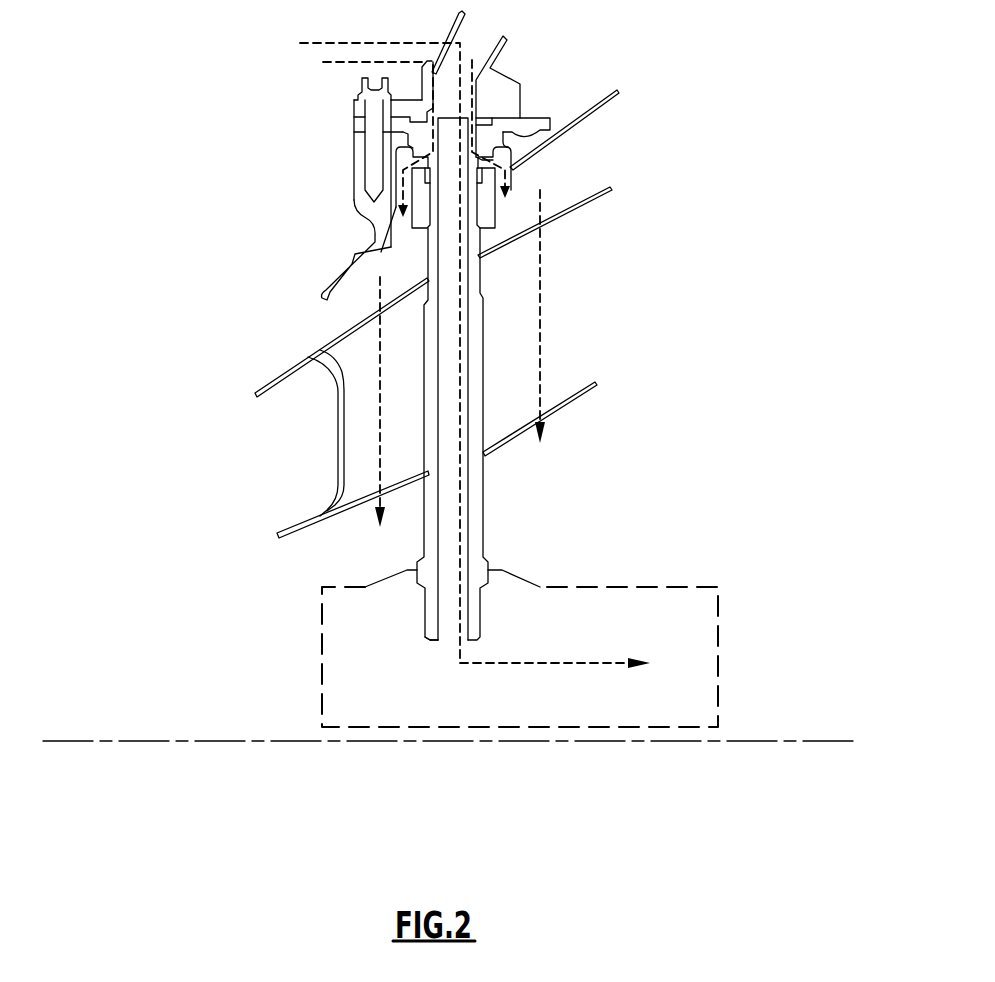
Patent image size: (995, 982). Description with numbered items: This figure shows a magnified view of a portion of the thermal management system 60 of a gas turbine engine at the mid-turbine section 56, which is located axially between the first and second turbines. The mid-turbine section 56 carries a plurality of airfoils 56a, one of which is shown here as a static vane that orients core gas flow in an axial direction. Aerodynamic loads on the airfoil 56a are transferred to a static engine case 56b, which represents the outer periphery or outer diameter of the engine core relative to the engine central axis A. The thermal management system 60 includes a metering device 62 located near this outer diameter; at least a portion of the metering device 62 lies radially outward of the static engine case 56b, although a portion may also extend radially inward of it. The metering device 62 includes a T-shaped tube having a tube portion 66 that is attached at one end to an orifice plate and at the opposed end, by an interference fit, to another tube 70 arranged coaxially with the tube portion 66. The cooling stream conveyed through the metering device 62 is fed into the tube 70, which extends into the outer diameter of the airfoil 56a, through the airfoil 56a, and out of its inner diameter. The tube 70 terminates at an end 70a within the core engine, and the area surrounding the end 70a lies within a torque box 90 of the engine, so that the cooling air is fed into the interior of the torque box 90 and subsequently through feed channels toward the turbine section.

The thermal management system 60 is at (407, 350).
The mid-turbine section 56 is at (339, 224).
The airfoil 56a is at (355, 412).
The static engine case 56b is at (577, 119).
The metering device 62 is at (518, 207).
The tube portion 66 is at (489, 230).
The tube 70 is at (470, 297).
The end 70a is at (431, 652).
The torque box 90 is at (634, 742).
The engine central axis A is at (88, 741).